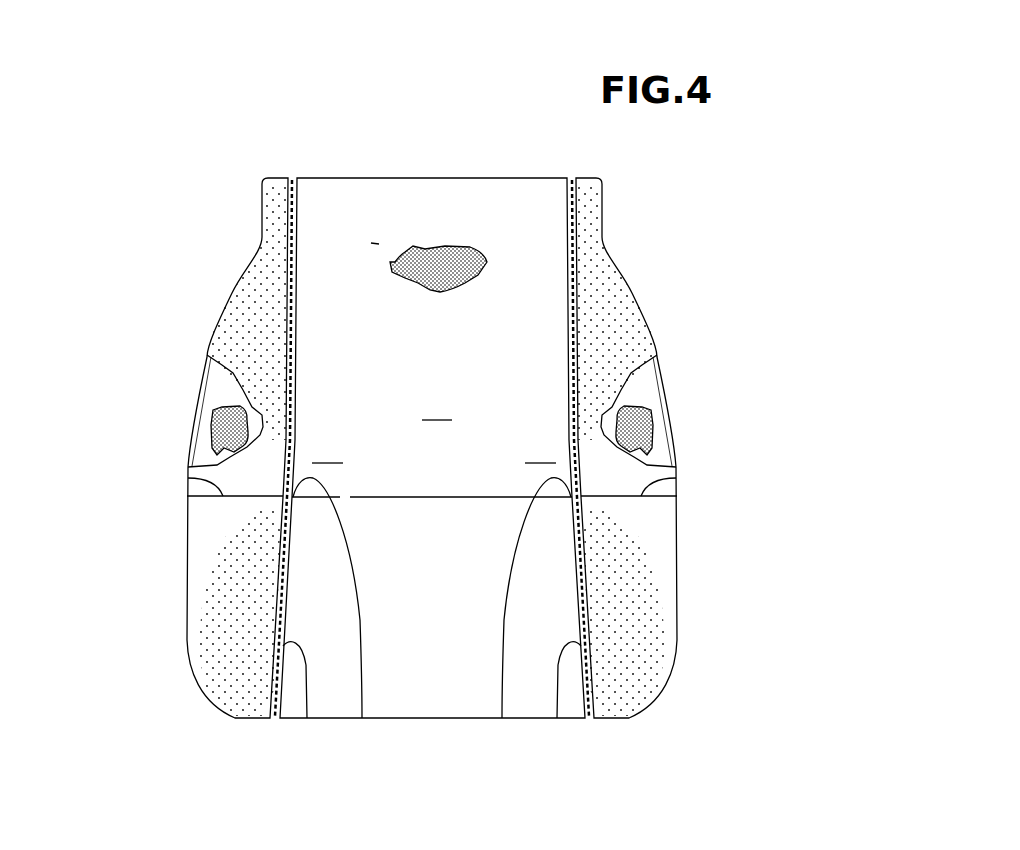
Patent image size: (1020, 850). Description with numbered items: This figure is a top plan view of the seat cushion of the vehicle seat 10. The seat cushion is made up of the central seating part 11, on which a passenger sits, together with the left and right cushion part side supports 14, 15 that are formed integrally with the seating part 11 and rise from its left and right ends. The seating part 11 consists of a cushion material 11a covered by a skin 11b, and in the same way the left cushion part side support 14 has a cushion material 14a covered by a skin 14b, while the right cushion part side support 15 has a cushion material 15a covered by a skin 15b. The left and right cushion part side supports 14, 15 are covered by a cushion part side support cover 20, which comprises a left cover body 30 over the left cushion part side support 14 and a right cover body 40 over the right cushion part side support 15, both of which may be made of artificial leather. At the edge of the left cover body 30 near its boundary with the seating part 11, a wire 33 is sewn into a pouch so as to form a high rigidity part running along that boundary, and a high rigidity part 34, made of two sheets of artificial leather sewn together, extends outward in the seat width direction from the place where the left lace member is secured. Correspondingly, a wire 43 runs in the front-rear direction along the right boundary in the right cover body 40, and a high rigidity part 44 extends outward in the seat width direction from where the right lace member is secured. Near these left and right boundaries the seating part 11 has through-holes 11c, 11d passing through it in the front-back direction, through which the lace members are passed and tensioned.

The vehicle seat 10 is at (148, 128).
The seating part 11 is at (388, 118).
The cushion material 11a is at (375, 243).
The skin 11b is at (431, 267).
The left through-hole 11c is at (502, 718).
The right through-hole 11d is at (362, 718).
The left cushion part side support 14 is at (776, 355).
The cushion material 14a is at (634, 432).
The skin 14b is at (634, 388).
The right cushion part side support 15 is at (88, 355).
The cushion material 15a is at (230, 432).
The skin 15b is at (230, 388).
The cushion part side support cover 20 is at (432, 448).
The left cover body 30 is at (679, 626).
The wire 33 is at (557, 718).
The high rigidity part 34 is at (676, 478).
The right cover body 40 is at (185, 626).
The wire 43 is at (307, 718).
The high rigidity part 44 is at (188, 478).